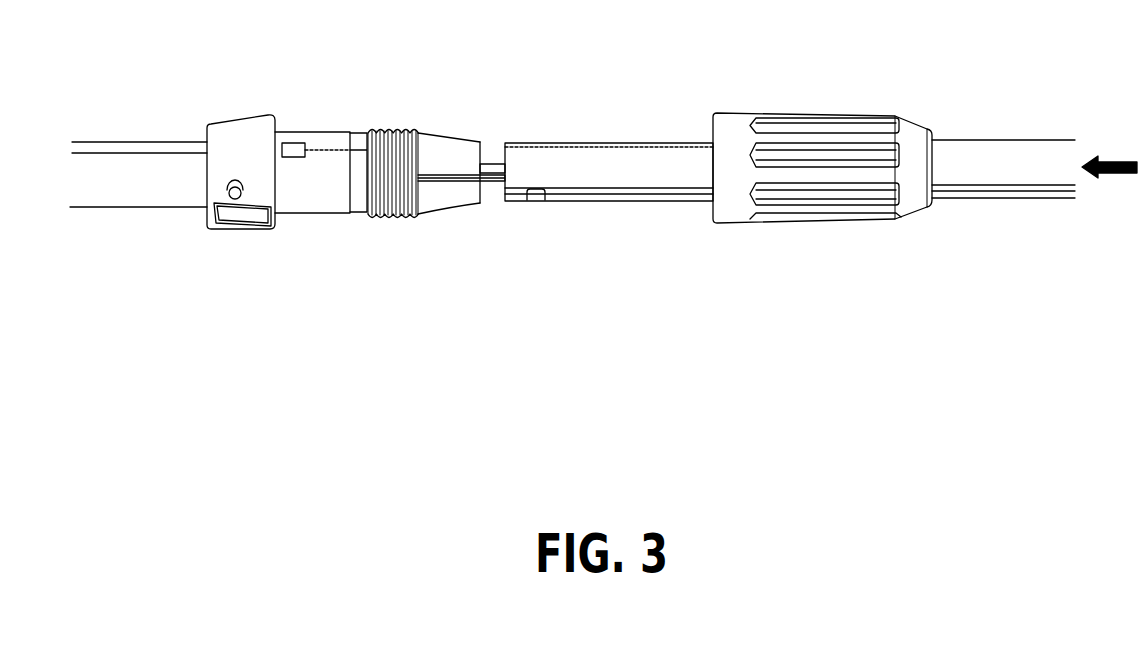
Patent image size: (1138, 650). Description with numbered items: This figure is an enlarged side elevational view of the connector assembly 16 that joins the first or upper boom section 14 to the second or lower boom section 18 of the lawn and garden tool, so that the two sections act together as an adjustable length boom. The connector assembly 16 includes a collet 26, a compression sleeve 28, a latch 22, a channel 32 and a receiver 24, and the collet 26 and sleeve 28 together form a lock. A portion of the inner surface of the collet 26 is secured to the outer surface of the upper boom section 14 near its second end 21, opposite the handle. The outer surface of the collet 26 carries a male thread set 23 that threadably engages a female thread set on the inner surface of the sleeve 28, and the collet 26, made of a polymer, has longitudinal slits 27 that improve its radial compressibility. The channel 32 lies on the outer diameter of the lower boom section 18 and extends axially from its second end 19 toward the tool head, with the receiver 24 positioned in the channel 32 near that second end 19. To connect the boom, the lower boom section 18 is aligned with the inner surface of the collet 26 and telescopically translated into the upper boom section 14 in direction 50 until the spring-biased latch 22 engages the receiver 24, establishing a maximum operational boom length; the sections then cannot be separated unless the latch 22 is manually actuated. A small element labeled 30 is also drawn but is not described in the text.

The first or upper boom section 14 is at (120, 167).
The connector assembly 16 is at (412, 304).
The second or lower boom section 18 is at (987, 163).
The second end of boom section 18 19 is at (507, 203).
The second end of boom section 14 21 is at (479, 203).
The latch 22 is at (262, 220).
The male thread set 23 is at (376, 143).
The receiver 24 is at (535, 192).
The collet 26 is at (453, 153).
The longitudinal slits 27 is at (441, 175).
The compression sleeve 28 is at (815, 137).
The pin collar 30 is at (490, 167).
The channel 32 is at (638, 195).
The direction 50 is at (1117, 170).